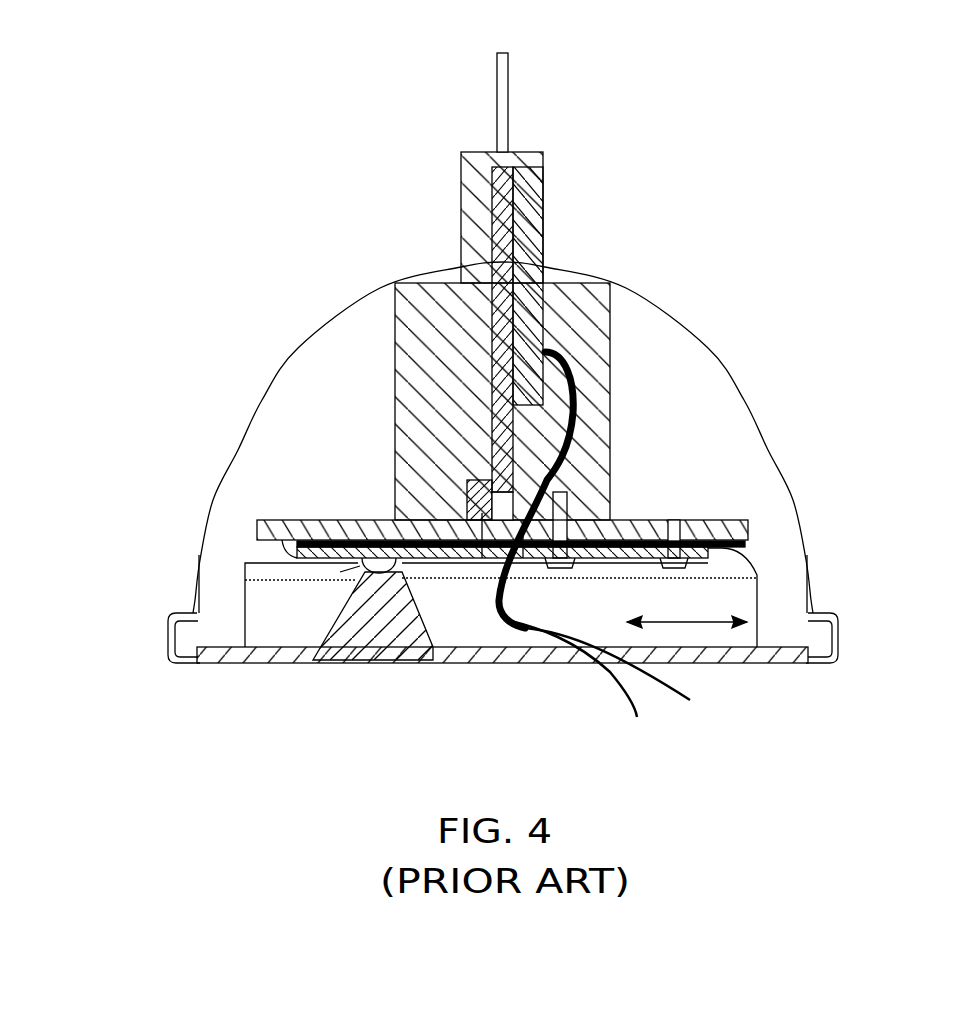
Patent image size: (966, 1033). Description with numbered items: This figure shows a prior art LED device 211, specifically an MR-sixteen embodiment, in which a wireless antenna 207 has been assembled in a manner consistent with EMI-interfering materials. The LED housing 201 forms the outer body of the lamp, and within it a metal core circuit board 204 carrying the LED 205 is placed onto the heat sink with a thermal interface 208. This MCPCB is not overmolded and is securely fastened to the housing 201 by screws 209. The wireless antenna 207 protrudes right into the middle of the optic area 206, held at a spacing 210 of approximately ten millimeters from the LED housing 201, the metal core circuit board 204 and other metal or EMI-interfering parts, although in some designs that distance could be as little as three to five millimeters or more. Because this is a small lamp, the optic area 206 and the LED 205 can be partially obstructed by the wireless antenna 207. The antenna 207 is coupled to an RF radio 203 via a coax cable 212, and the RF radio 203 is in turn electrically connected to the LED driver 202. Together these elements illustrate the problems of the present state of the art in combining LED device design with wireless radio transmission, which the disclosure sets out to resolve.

The LED housing 201 is at (300, 347).
The LED driver 202 is at (500, 208).
The RF radio 203 is at (537, 282).
The metal core circuit board 204 is at (355, 563).
The LED 205 is at (360, 568).
The optic area 206 is at (407, 640).
The wireless antenna 207 is at (633, 697).
The thermal interface 208 is at (723, 550).
The screws 209 is at (567, 495).
The spacing 210 is at (707, 623).
The LED device 211 is at (795, 120).
The coax cable 212 is at (548, 372).